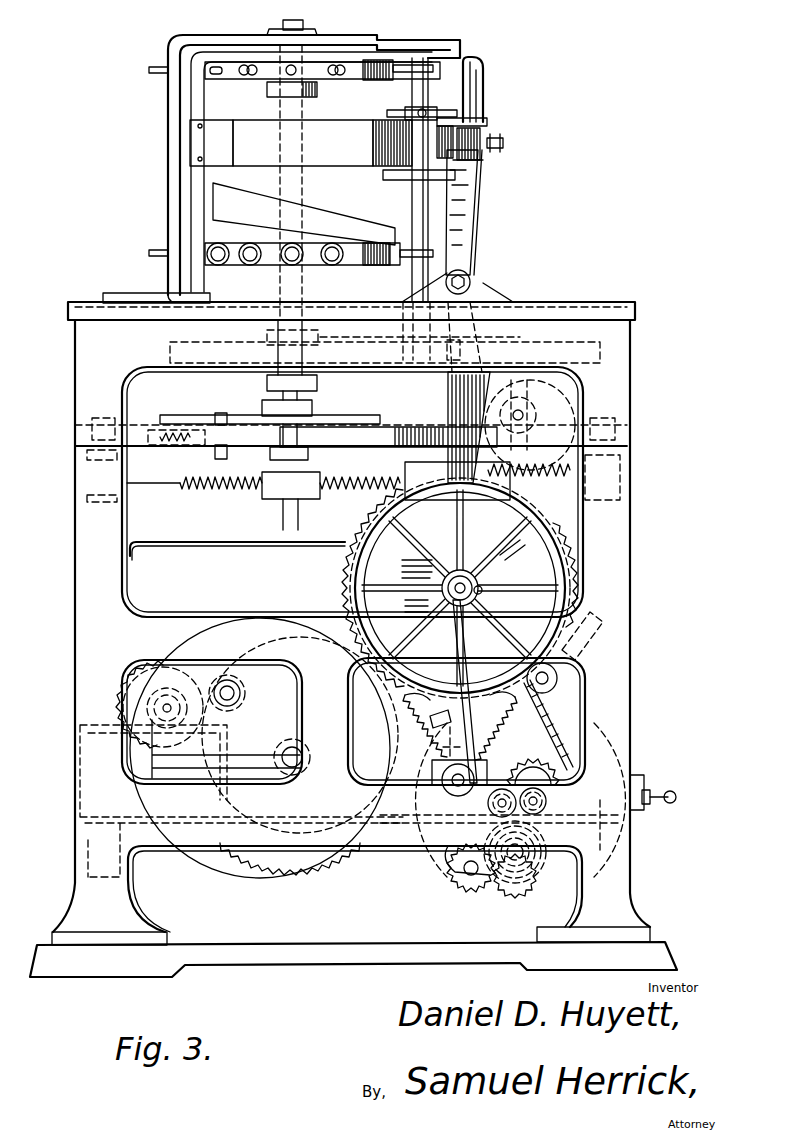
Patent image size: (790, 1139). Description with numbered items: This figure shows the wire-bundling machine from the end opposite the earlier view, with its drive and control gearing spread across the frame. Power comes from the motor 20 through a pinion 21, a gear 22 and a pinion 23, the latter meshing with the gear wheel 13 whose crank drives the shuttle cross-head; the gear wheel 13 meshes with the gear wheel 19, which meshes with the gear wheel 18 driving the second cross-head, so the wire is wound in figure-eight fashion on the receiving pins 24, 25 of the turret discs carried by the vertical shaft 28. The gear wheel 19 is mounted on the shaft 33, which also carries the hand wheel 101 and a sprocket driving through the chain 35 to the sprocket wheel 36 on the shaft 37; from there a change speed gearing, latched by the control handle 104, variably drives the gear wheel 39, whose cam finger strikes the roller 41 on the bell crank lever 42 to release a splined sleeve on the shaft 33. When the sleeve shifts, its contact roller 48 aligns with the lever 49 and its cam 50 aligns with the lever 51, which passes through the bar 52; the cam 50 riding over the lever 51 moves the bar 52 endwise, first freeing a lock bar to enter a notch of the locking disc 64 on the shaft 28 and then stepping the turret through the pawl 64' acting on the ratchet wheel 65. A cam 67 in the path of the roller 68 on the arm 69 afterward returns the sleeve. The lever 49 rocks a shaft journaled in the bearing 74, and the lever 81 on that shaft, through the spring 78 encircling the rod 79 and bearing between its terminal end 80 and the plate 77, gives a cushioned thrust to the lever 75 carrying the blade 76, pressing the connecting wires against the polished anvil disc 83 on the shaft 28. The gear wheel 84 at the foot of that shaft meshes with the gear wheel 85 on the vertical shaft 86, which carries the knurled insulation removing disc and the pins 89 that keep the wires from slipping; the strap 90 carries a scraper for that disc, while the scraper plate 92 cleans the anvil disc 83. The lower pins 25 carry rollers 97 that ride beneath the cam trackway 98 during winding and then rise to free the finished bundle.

The gear wheel 13 is at (317, 872).
The gear wheel 18 is at (573, 376).
The gear wheel 19 is at (343, 580).
The motor 20 is at (212, 722).
The pinion 21 is at (246, 693).
The gear 22 is at (140, 688).
The pinion 23 is at (186, 664).
The receiving pins 24 is at (148, 70).
The receiving pins 25 is at (148, 253).
The vertical shaft 28 is at (302, 103).
The shaft 33 is at (468, 590).
The chain 35 is at (546, 716).
The sprocket wheel 36 is at (535, 760).
The shaft 37 is at (546, 801).
The gear wheel 39 is at (420, 768).
The roller 41 is at (430, 719).
The bell crank lever 42 is at (407, 746).
The contact roller 48 is at (469, 691).
The lever 49 is at (450, 412).
The cam 50 is at (584, 612).
The lever 51 is at (410, 580).
The bar 52 is at (388, 428).
The locking disc 64 is at (313, 447).
The pawl 64' is at (271, 400).
The ratchet wheel 65 is at (336, 415).
The cam 67 is at (376, 526).
The roller 68 is at (516, 551).
The arm 69 is at (576, 568).
The bearing 74 is at (476, 286).
The lever 75 is at (467, 243).
The blade or knife 76 is at (487, 124).
The laterally extending plate 77 is at (468, 165).
The spring 78 is at (490, 160).
The rod or bolt 79 is at (504, 146).
The terminal end 80 is at (488, 140).
The lever 81 is at (482, 197).
The anvil disc 83 is at (303, 143).
The gear wheel 84 is at (170, 352).
The gear wheel 85 is at (398, 350).
The vertical shaft 86 is at (412, 196).
The pins 89 is at (441, 107).
The strap 90 is at (484, 87).
The scraper plate 92 is at (211, 143).
The rollers 97 is at (246, 268).
The cam trackway 98 is at (385, 232).
The hand wheel 101 is at (350, 598).
The control handle 104 is at (660, 796).